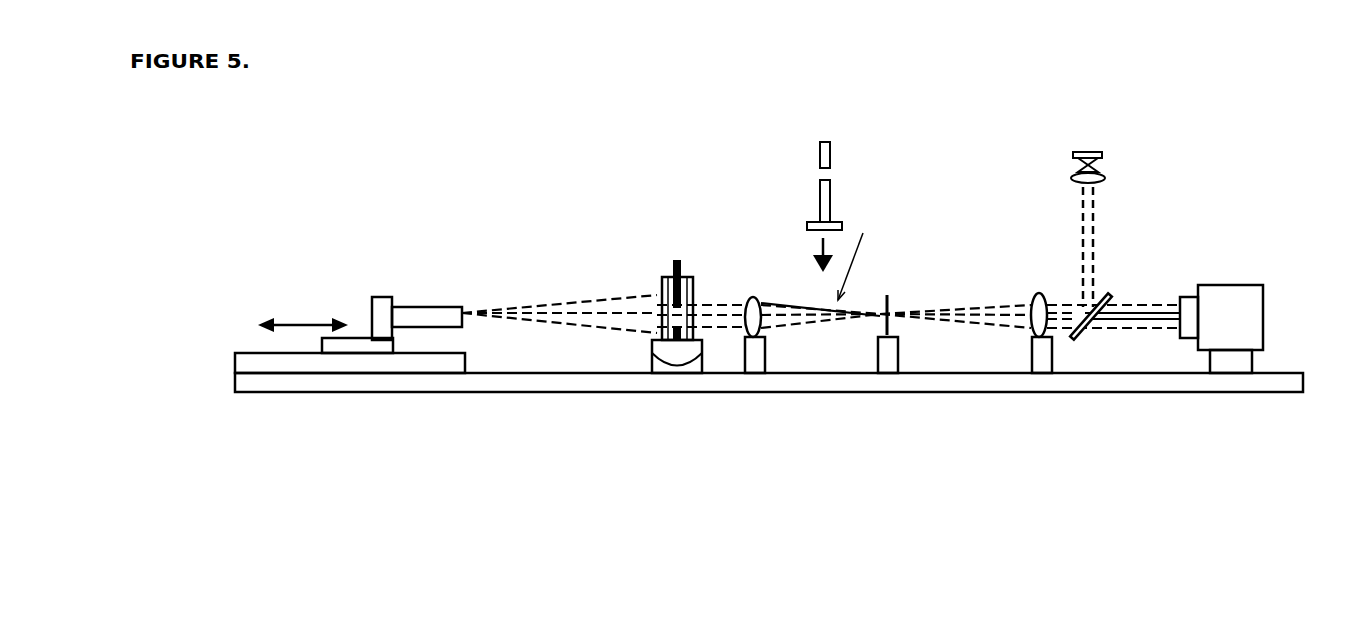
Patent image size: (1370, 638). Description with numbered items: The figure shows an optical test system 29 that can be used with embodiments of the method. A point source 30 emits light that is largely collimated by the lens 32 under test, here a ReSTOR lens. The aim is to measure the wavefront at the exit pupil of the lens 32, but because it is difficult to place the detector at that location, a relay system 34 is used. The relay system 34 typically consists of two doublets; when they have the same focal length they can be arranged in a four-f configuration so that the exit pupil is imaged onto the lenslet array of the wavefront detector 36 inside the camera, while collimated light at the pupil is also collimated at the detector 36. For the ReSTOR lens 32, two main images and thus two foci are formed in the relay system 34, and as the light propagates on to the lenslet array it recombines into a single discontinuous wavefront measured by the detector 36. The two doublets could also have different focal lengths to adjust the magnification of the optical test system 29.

The optical test system 29 is at (319, 168).
The point source 30 is at (462, 300).
The lens 32 is at (672, 260).
The relay system 34 is at (732, 370).
The wavefront detector 36 is at (1253, 312).